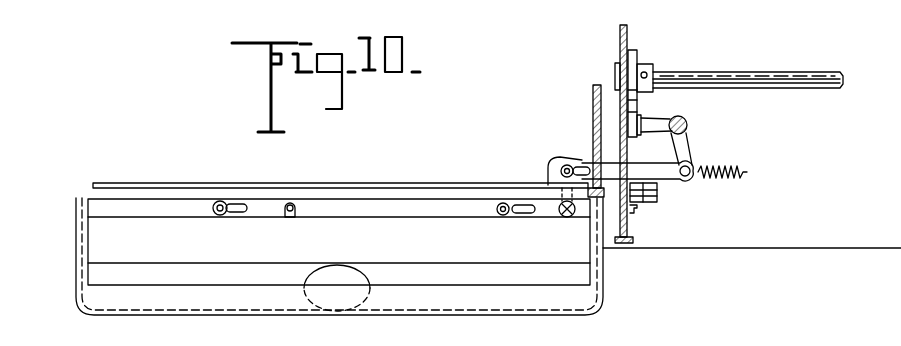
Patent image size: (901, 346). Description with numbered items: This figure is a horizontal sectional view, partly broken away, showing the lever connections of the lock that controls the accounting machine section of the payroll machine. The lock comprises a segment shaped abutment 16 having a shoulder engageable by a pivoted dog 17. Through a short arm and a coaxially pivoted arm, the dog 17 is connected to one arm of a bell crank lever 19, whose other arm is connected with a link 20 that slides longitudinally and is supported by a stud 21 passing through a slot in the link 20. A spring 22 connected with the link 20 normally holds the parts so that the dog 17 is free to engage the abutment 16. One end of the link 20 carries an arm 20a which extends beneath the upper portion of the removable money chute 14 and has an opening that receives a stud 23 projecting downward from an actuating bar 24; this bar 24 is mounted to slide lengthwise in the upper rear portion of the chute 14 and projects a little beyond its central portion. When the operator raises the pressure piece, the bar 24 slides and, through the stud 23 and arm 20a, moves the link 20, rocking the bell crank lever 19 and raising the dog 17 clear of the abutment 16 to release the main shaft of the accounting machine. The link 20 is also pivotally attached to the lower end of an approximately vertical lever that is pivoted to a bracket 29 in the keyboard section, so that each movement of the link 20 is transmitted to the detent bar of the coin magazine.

The discharge chute 14 is at (555, 297).
The segment shaped abutment 16 is at (648, 70).
The pivoted dog 17 is at (641, 108).
The bell crank lever 19 is at (690, 160).
The link 20 is at (607, 167).
The arm 20a is at (552, 160).
The stud 21 is at (570, 163).
The spring 22 is at (725, 170).
The stud 23 is at (562, 218).
The actuating bar 24 is at (340, 207).
The bracket 29 is at (298, 212).